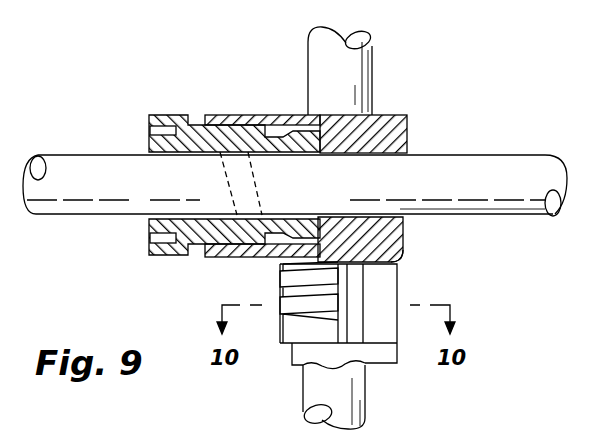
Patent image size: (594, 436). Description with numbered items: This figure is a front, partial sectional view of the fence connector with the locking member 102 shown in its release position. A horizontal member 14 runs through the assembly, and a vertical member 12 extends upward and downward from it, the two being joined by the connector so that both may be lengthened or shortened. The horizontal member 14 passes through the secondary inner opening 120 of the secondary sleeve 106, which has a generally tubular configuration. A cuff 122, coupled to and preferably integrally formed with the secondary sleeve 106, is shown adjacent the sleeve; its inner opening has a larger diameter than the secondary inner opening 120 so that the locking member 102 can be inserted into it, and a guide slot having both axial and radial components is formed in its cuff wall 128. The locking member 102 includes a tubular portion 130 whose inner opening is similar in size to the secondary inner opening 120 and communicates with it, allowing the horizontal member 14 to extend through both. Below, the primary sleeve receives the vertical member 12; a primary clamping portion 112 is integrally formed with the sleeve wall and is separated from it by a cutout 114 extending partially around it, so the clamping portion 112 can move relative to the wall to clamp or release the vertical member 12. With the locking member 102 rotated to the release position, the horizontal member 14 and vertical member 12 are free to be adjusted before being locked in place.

The vertical member 12 is at (373, 53).
The horizontal member 14 is at (70, 154).
The locking member 102 is at (147, 118).
The secondary sleeve 106 is at (403, 111).
The primary clamping portion 112 is at (330, 325).
The cutout 114 is at (360, 322).
The secondary inner opening 120 is at (407, 153).
The cuff 122 is at (271, 114).
The cuff wall 128 is at (221, 118).
The tubular portion 130 is at (197, 240).